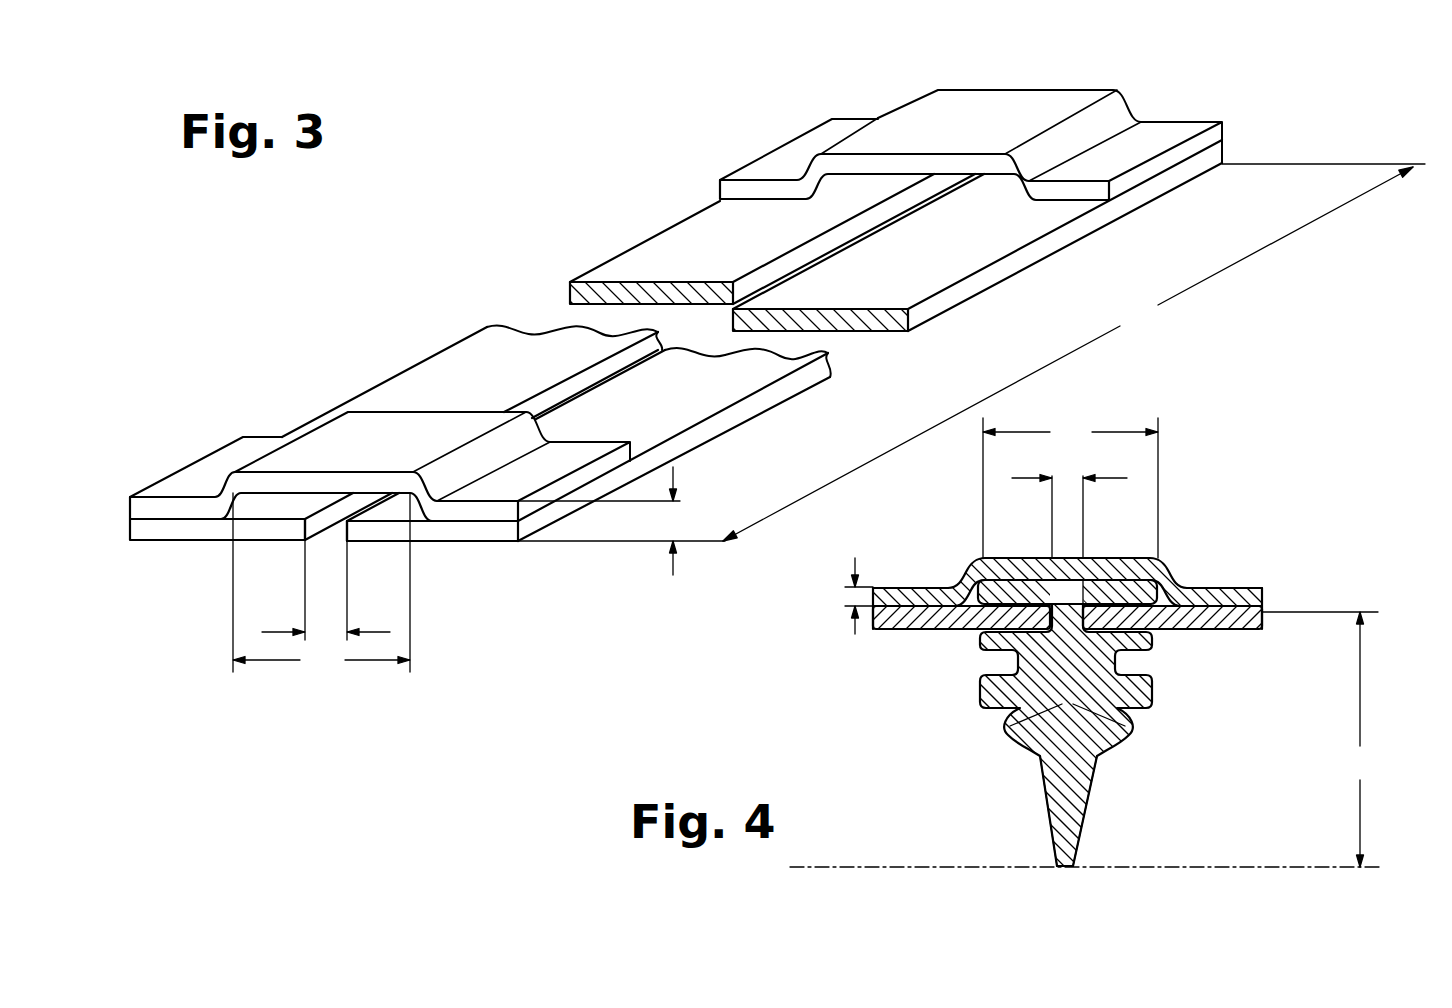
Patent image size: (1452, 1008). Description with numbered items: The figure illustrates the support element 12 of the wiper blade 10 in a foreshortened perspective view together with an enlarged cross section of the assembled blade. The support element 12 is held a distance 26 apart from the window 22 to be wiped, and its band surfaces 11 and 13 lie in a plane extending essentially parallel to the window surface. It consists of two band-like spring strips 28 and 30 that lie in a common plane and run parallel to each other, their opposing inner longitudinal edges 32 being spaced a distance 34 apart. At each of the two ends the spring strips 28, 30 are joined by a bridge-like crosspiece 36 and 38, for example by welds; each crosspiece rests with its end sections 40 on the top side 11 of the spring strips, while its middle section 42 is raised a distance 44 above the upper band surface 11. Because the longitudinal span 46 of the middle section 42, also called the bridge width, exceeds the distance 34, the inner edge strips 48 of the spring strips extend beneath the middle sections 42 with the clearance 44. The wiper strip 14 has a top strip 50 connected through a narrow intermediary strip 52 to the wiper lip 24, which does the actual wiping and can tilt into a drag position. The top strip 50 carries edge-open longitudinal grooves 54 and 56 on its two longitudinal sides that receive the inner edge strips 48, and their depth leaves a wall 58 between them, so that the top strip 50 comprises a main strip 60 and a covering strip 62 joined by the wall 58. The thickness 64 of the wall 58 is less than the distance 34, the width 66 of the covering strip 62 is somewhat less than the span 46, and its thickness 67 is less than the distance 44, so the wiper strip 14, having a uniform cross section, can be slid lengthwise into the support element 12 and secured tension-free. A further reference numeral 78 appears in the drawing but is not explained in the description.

In FIG. 4, the wiper blade 10 is at (953, 675).
In FIG. 3, the upper band surface 11 is at (680, 233).
In FIG. 3, the support element 12 is at (602, 253).
In FIG. 4, the support element 12 is at (1203, 573).
In FIG. 3, the band surface 13 is at (207, 541).
In FIG. 4, the band surface 13 is at (883, 629).
In FIG. 4, the wiper strip 14 is at (1163, 697).
In FIG. 4, the window 22 is at (845, 866).
In FIG. 3, the wiper lip 24 is at (504, 352).
In FIG. 4, the wiper lip 24 is at (1065, 829).
In FIG. 4, the distance 26 is at (1320, 739).
In FIG. 3, the spring strip 28 is at (453, 340).
In FIG. 4, the spring strip 28 is at (873, 629).
In FIG. 3, the spring strip 30 is at (753, 430).
In FIG. 4, the spring strip 30 is at (1255, 620).
In FIG. 3, the inner longitudinal edges 32 is at (320, 527).
In FIG. 3, the distance 34 is at (326, 593).
In FIG. 3, the bridge-like crosspiece 36 is at (387, 407).
In FIG. 4, the bridge-like crosspiece 36 is at (1168, 555).
In FIG. 3, the bridge-like crosspiece 38 is at (904, 101).
In FIG. 3, the end sections 40 is at (802, 147).
In FIG. 4, the end sections 40 is at (905, 590).
In FIG. 3, the middle section 42 is at (1030, 108).
In FIG. 3, the distance 44 is at (621, 521).
In FIG. 3, the longitudinal span 46 is at (321, 584).
In FIG. 3, the inner edge strips 48 is at (285, 532).
In FIG. 4, the top strip 50 is at (973, 707).
In FIG. 4, the intermediary strip 52 is at (1107, 745).
In FIG. 4, the longitudinal groove 54 is at (972, 630).
In FIG. 4, the longitudinal groove 56 is at (1152, 632).
In FIG. 4, the wall 58 is at (1032, 558).
In FIG. 4, the main strip 60 is at (1120, 666).
In FIG. 4, the covering strip 62 is at (1120, 558).
In FIG. 4, the thickness 64 is at (1069, 505).
In FIG. 4, the width 66 is at (1070, 488).
In FIG. 4, the thickness 67 is at (845, 596).
In FIG. 3, the joint length 78 is at (1074, 352).